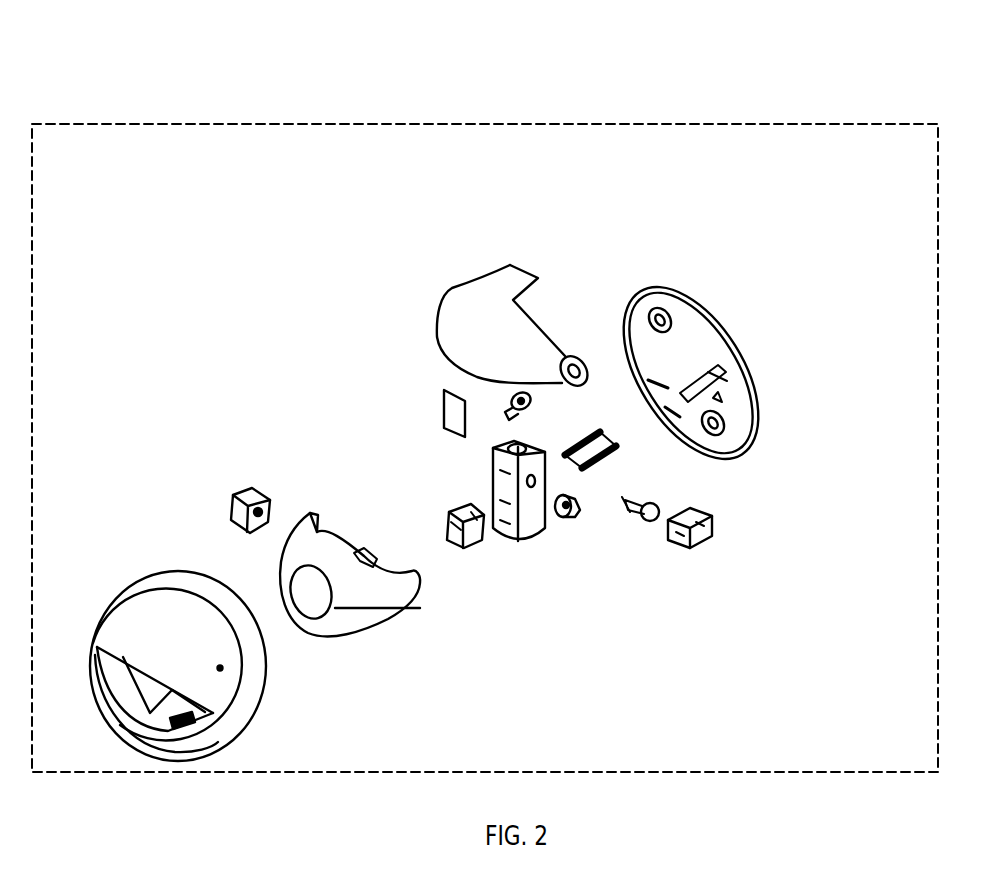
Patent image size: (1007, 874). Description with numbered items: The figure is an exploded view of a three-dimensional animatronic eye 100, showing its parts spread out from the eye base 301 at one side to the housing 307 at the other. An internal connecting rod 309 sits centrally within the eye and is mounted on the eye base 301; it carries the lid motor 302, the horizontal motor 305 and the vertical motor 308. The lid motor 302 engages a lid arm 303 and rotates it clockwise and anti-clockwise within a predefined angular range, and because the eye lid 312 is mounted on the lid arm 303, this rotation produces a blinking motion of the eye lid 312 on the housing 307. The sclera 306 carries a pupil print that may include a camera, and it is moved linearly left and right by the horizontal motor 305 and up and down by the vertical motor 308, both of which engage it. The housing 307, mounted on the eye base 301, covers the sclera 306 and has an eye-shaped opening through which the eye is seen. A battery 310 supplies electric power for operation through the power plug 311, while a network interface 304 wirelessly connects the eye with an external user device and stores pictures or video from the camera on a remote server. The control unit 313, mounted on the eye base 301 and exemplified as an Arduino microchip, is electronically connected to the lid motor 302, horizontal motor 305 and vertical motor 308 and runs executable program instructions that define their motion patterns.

The 3D animatronic eye 100 is at (857, 123).
The eye base 301 is at (728, 325).
The lid motor 302 is at (707, 517).
The lid arm 303 is at (643, 527).
The network interface 304 is at (581, 508).
The horizontal motor 305 is at (484, 532).
The sclera 306 is at (420, 608).
The housing 307 is at (170, 647).
The vertical motor 308 is at (250, 487).
The internal connecting rod 309 is at (493, 500).
The battery 310 is at (450, 407).
The power plug 311 is at (500, 403).
The eye lid 312 is at (470, 305).
The control unit 313 is at (597, 427).